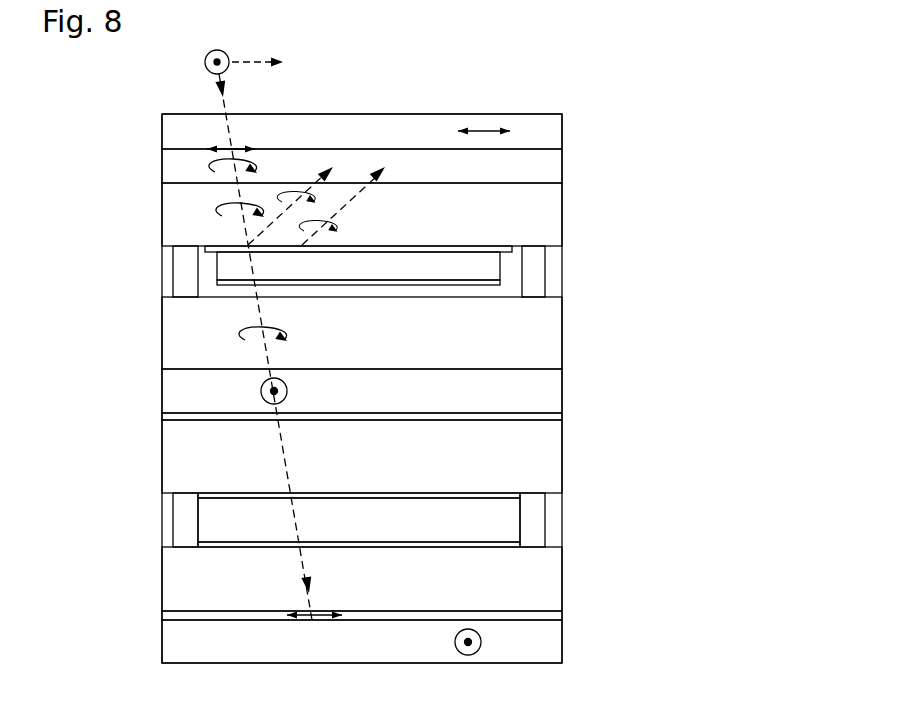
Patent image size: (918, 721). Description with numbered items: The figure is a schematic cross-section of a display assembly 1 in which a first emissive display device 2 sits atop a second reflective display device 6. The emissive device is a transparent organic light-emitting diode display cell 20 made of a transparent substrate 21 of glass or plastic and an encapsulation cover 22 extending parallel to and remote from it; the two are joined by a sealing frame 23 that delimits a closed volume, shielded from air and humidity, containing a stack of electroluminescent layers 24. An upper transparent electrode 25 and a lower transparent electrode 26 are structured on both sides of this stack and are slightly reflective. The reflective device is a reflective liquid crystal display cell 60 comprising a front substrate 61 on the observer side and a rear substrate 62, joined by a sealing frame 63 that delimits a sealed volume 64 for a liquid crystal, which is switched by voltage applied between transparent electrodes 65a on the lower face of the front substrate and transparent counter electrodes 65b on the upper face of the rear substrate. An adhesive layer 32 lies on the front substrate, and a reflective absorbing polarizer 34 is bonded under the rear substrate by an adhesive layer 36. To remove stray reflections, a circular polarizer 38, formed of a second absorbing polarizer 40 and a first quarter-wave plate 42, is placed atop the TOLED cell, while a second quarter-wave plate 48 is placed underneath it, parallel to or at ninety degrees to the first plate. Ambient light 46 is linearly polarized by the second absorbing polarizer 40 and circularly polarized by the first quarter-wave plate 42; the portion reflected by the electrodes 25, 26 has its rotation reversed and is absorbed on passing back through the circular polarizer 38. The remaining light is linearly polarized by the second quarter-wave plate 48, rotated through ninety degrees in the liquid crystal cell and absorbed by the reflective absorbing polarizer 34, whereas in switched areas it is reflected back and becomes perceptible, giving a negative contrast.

The display assembly 1 is at (752, 258).
The first emissive display device 2 is at (386, 268).
The second reflective display device 6 is at (386, 529).
The transparent organic light-emitting diode display cell 20 is at (436, 262).
The transparent substrate 21 is at (549, 213).
The encapsulation cover 22 is at (538, 331).
The sealing frame 23 is at (531, 284).
The stack of electroluminescent layers 24 is at (489, 268).
The upper transparent electrode 25 is at (492, 246).
The lower transparent electrode 26 is at (479, 288).
The adhesive layer 32 is at (541, 419).
The reflective absorbing polarizer 34 is at (553, 650).
The adhesive layer 36 is at (553, 616).
The circular polarizer 38 is at (364, 145).
The second absorbing polarizer 40 is at (556, 126).
The first quarter-wave plate 42 is at (556, 158).
The ambient light 46 is at (218, 50).
The second quarter-wave plate 48 is at (546, 391).
The reflective liquid crystal display cell 60 is at (436, 504).
The front substrate 61 is at (544, 441).
The rear substrate 62 is at (553, 587).
The sealing frame 63 is at (536, 505).
The sealed volume 64 is at (494, 515).
The transparent electrodes 65a is at (481, 488).
The transparent counter electrodes 65b is at (481, 545).